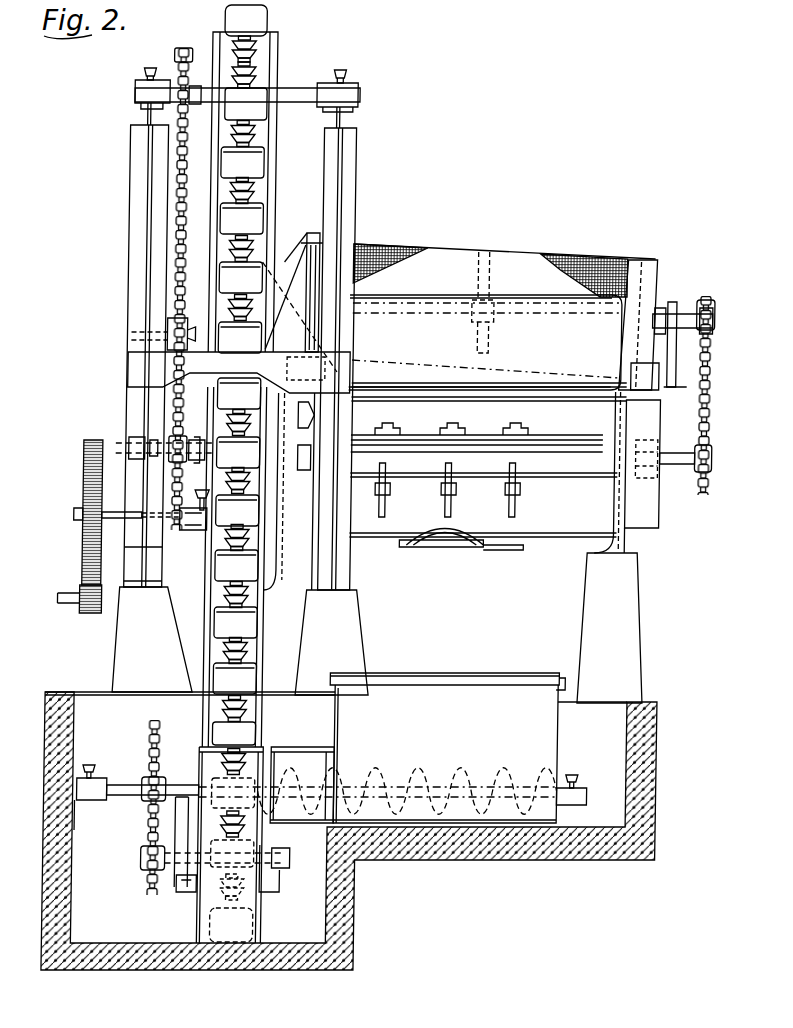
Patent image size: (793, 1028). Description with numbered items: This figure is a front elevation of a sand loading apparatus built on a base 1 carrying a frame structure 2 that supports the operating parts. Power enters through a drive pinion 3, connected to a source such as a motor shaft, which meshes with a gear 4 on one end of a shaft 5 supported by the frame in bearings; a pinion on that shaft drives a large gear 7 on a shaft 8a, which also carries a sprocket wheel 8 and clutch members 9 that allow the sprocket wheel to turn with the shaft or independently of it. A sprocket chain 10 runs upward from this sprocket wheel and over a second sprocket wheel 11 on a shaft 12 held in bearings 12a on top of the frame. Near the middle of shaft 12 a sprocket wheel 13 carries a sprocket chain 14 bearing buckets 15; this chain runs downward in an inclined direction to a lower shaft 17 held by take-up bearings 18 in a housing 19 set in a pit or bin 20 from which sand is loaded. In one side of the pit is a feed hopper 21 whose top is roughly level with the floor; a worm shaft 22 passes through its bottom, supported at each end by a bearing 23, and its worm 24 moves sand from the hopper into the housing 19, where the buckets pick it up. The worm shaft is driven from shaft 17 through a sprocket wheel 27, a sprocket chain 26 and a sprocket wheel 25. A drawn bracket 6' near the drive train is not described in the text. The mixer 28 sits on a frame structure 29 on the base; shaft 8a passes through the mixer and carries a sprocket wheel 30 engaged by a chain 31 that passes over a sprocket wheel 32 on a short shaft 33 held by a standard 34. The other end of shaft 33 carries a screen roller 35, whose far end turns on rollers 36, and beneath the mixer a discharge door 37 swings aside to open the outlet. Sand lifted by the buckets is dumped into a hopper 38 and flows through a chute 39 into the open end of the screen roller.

The base 1 is at (128, 660).
The frame structure 2 is at (132, 190).
The drive pinion 3 is at (83, 613).
The gear 4 is at (86, 467).
The shaft 5 is at (120, 512).
The bracket 6' is at (193, 537).
The large gear 7 is at (212, 471).
The sprocket wheel 8 is at (180, 438).
The shaft 8a is at (130, 440).
The clutch members 9 is at (193, 444).
The sprocket chain 10 is at (186, 205).
The second sprocket wheel 11 is at (176, 70).
The shaft 12 is at (200, 85).
The bearings 12a is at (132, 90).
The sprocket wheel 13 is at (259, 86).
The sprocket chain 14 is at (256, 55).
The buckets 15 is at (262, 13).
The shaft 17 is at (194, 892).
The take-up bearings 18 is at (183, 840).
The housing 19 is at (206, 922).
The pit or bin 20 is at (125, 925).
The feed hopper 21 is at (453, 675).
The worm shaft 22 is at (125, 783).
The bearing 23 is at (97, 765).
The worm 24 is at (490, 775).
The sprocket wheel 25 is at (167, 775).
The sprocket chain 26 is at (156, 801).
The sprocket wheel 27 is at (149, 862).
The mixer 28 is at (554, 530).
The frame structure 29 is at (286, 530).
The sprocket wheel 30 is at (716, 455).
The chain 31 is at (716, 390).
The sprocket wheel 32 is at (716, 322).
The short shaft 33 is at (661, 300).
The standard 34 is at (678, 300).
The screen roller 35 is at (590, 258).
The rollers 36 is at (239, 337).
The discharge door 37 is at (456, 549).
The hopper 38 is at (272, 118).
The chute 39 is at (283, 258).